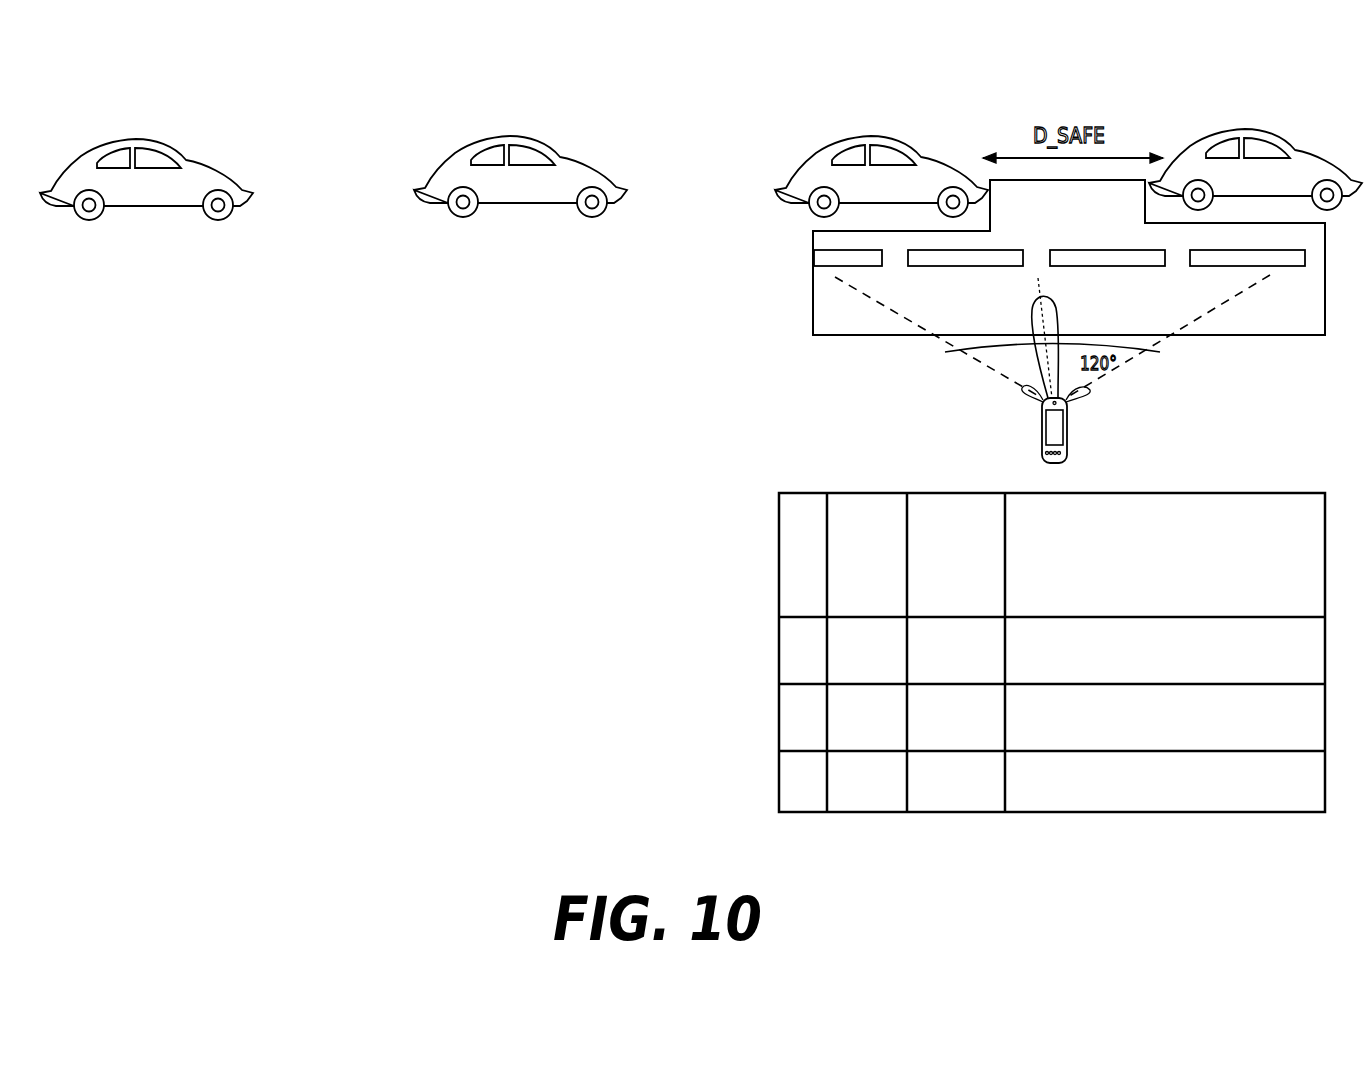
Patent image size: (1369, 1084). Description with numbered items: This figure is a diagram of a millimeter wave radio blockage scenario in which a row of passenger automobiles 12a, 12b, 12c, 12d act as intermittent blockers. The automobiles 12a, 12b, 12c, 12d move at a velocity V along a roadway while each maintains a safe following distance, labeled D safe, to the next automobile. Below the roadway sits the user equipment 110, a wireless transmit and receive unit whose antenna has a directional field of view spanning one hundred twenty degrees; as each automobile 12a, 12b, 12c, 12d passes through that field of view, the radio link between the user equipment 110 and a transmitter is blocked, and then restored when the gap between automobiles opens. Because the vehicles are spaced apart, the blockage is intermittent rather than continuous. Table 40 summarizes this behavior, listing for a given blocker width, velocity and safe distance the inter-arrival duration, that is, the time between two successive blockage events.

The passenger automobile 12a is at (141, 139).
The passenger automobile 12b is at (524, 136).
The passenger automobile 12c is at (888, 136).
The passenger automobile 12d is at (1281, 129).
The user equipment 110 is at (1067, 452).
The table 40 is at (612, 567).